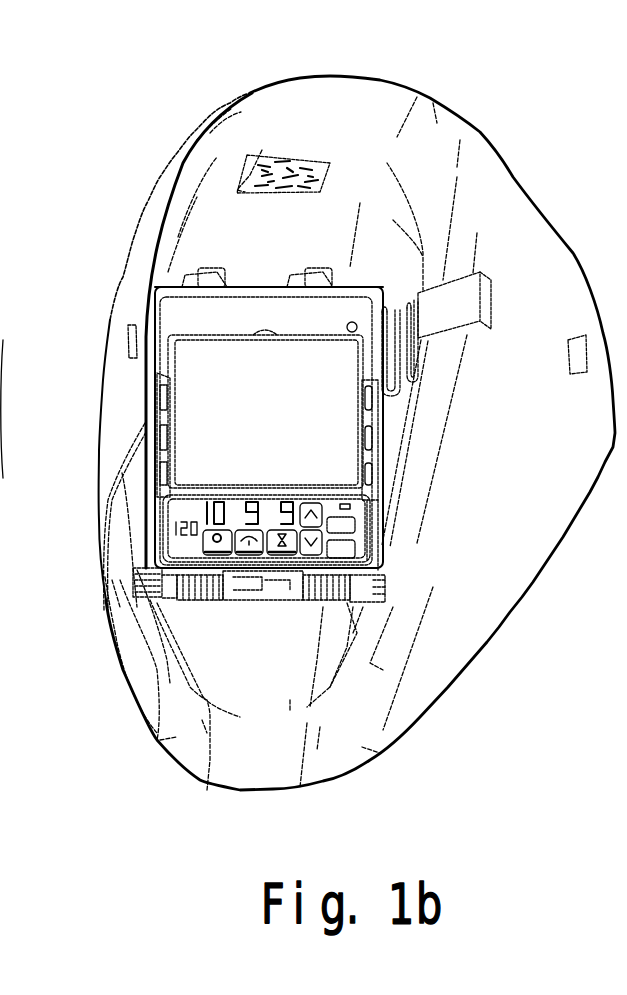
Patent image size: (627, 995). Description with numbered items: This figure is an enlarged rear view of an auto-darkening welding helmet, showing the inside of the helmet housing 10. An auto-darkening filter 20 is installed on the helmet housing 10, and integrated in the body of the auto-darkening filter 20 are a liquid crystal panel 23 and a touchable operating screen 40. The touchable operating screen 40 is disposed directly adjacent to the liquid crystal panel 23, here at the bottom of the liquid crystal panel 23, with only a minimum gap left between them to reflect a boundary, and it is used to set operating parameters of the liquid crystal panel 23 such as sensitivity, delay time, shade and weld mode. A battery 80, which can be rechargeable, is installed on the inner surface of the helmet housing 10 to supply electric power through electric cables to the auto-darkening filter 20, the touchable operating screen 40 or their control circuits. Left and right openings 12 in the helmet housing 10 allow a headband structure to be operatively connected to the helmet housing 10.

The helmet housing 10 is at (487, 177).
The left and right openings 12 is at (576, 338).
The auto-darkening filter 20 is at (177, 310).
The liquid crystal panel 23 is at (265, 409).
The touchable operating screen 40 is at (172, 518).
The battery 80 is at (454, 305).